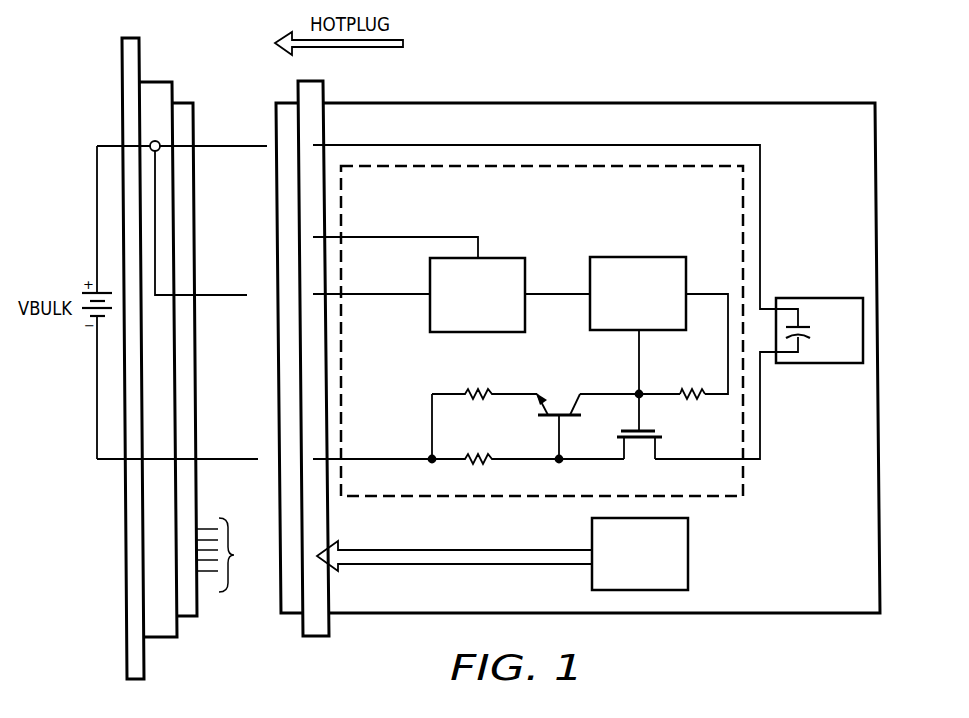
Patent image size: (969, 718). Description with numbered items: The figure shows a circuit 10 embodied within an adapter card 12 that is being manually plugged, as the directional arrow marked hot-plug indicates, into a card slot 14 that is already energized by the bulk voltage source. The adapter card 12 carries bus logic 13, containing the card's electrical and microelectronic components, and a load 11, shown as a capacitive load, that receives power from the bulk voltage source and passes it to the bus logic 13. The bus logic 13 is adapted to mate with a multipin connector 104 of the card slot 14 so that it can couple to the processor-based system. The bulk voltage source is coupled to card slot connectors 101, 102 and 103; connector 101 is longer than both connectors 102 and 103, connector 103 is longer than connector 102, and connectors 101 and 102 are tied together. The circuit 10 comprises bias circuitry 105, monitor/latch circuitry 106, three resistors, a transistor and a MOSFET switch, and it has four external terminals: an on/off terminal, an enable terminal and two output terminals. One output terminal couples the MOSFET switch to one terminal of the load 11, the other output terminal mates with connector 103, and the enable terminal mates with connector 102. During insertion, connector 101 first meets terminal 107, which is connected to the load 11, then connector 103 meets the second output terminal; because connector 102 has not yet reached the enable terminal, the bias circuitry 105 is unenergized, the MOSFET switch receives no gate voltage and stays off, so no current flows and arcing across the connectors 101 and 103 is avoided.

The circuit 10 is at (745, 470).
The load 11 is at (820, 298).
The adapter card 12 is at (806, 614).
The bus logic 13 is at (689, 557).
The card slot 14 is at (127, 592).
The connector 101 is at (226, 146).
The connector 102 is at (220, 295).
The connector 103 is at (220, 459).
The multipin connector 104 is at (235, 555).
The bias circuitry 105 is at (504, 257).
The monitor/latch circuitry 106 is at (660, 257).
The terminal 107 is at (455, 145).